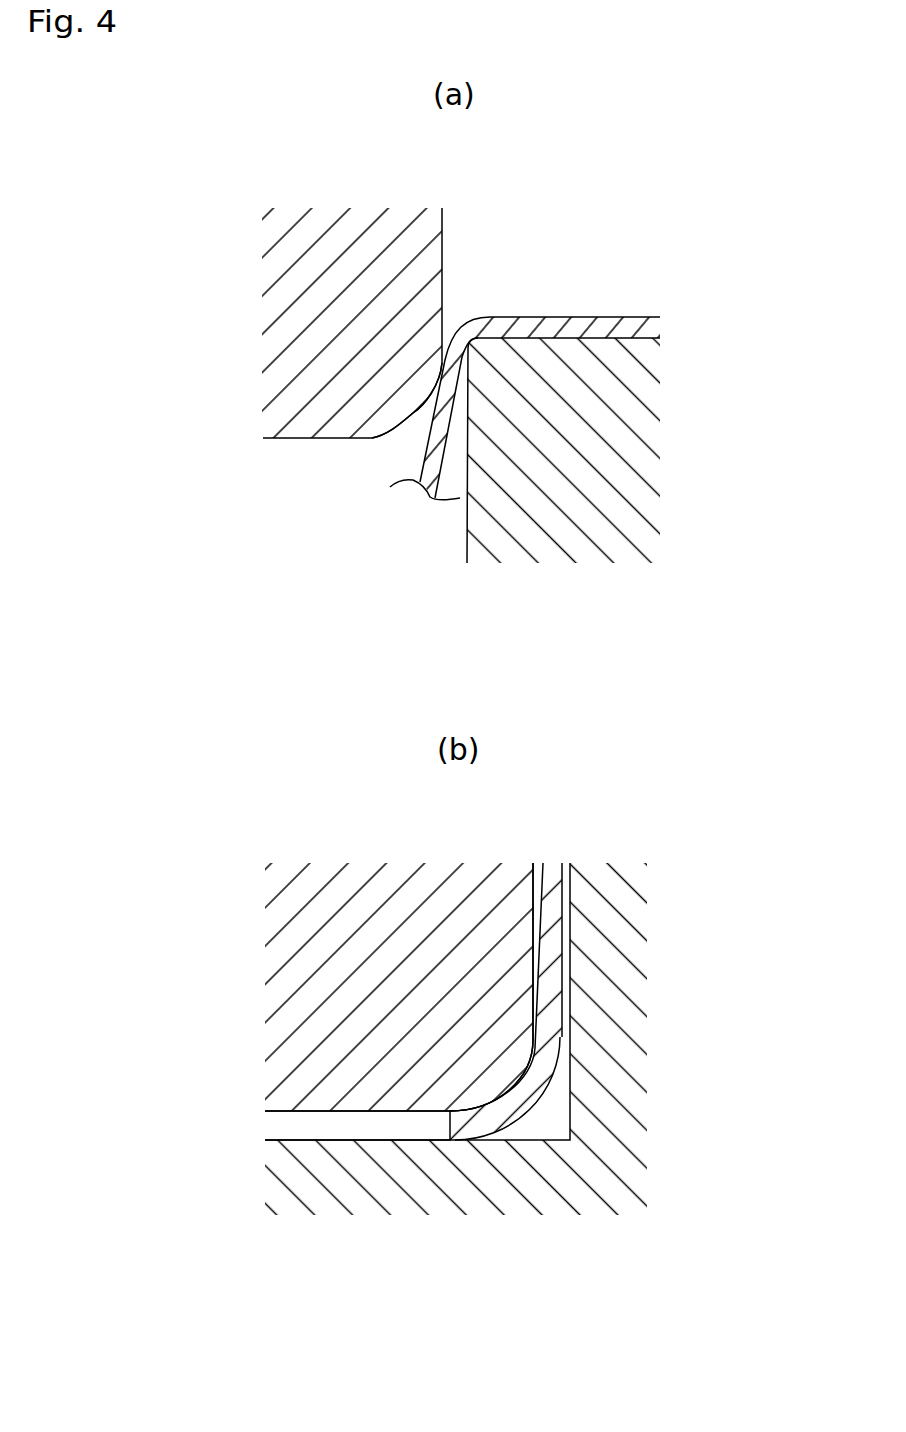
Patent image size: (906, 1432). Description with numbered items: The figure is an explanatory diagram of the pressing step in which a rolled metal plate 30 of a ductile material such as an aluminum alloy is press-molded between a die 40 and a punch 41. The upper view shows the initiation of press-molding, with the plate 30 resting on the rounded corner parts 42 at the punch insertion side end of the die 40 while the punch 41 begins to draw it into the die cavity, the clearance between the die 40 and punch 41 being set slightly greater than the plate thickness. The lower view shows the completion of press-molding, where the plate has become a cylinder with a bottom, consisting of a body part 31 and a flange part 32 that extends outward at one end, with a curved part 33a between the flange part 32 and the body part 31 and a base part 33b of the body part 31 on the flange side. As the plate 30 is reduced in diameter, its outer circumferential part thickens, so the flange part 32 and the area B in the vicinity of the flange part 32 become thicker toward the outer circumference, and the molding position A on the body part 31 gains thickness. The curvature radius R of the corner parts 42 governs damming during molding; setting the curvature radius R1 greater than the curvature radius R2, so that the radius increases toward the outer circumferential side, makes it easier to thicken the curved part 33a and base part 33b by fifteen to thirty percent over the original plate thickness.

The rolled metal plate 30 is at (582, 318).
The body part 31 is at (543, 883).
The flange part 32 is at (457, 1127).
The curved part 33a is at (527, 1103).
The base part 33b is at (553, 1032).
The die 40 is at (297, 438).
The punch 41 is at (560, 530).
The corner parts 42 is at (388, 438).
The curvature radius R is at (507, 1087).
The curvature radius R1 is at (463, 1107).
The curvature radius R2 is at (530, 1050).
The molding position A is at (580, 999).
The area in the vicinity of the flange part B is at (449, 1307).